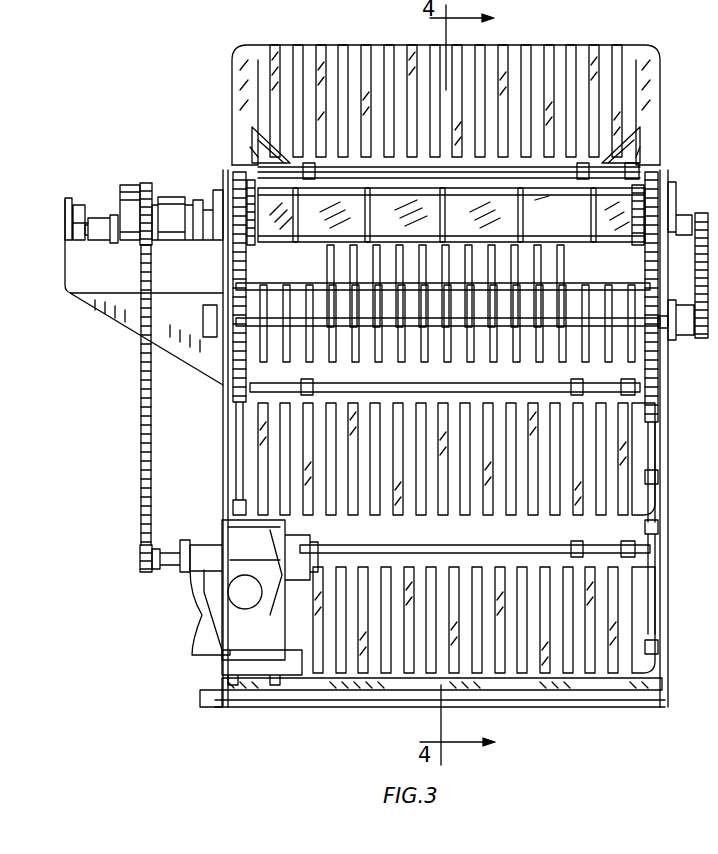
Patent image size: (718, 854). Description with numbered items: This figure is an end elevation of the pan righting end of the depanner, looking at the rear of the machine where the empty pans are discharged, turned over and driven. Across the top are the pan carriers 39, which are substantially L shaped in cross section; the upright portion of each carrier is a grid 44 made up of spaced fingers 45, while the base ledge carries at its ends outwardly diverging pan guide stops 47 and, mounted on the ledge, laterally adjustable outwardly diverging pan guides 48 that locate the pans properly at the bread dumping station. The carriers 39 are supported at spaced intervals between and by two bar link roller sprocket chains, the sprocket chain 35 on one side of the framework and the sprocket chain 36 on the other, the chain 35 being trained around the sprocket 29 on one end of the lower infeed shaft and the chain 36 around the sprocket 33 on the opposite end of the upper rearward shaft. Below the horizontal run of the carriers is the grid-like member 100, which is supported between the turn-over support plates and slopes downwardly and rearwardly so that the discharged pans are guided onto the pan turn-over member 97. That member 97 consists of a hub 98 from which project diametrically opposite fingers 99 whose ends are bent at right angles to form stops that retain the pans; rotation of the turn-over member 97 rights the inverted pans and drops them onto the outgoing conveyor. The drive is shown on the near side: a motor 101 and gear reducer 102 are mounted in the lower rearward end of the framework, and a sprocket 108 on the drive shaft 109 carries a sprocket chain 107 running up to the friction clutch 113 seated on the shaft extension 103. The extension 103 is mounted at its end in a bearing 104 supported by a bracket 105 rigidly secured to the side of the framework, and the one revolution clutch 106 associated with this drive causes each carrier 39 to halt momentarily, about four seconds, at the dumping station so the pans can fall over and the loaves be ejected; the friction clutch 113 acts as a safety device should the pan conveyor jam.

The sprocket 29 is at (632, 250).
The sprocket 33 is at (258, 245).
The sprocket chain 35 is at (653, 185).
The sprocket chain 36 is at (235, 175).
The pan carrier 39 is at (237, 56).
The grid 44 is at (245, 85).
The fingers 45 is at (387, 45).
The pan guide stops 47 is at (242, 140).
The pan guides 48 is at (252, 127).
The pan turn-over member 97 is at (632, 348).
The hub 98 is at (501, 330).
The fingers 99 is at (354, 358).
The grid-like member 100 is at (556, 270).
The motor 101 is at (190, 605).
The gear reducer 102 is at (200, 567).
The shaft extension 103 is at (100, 225).
The bearing 104 is at (85, 216).
The bracket 105 is at (88, 295).
The one revolution clutch 106 is at (170, 258).
The sprocket chain 107 is at (140, 447).
The sprocket 108 is at (140, 563).
The drive shaft 109 is at (162, 545).
The friction clutch 113 is at (135, 185).